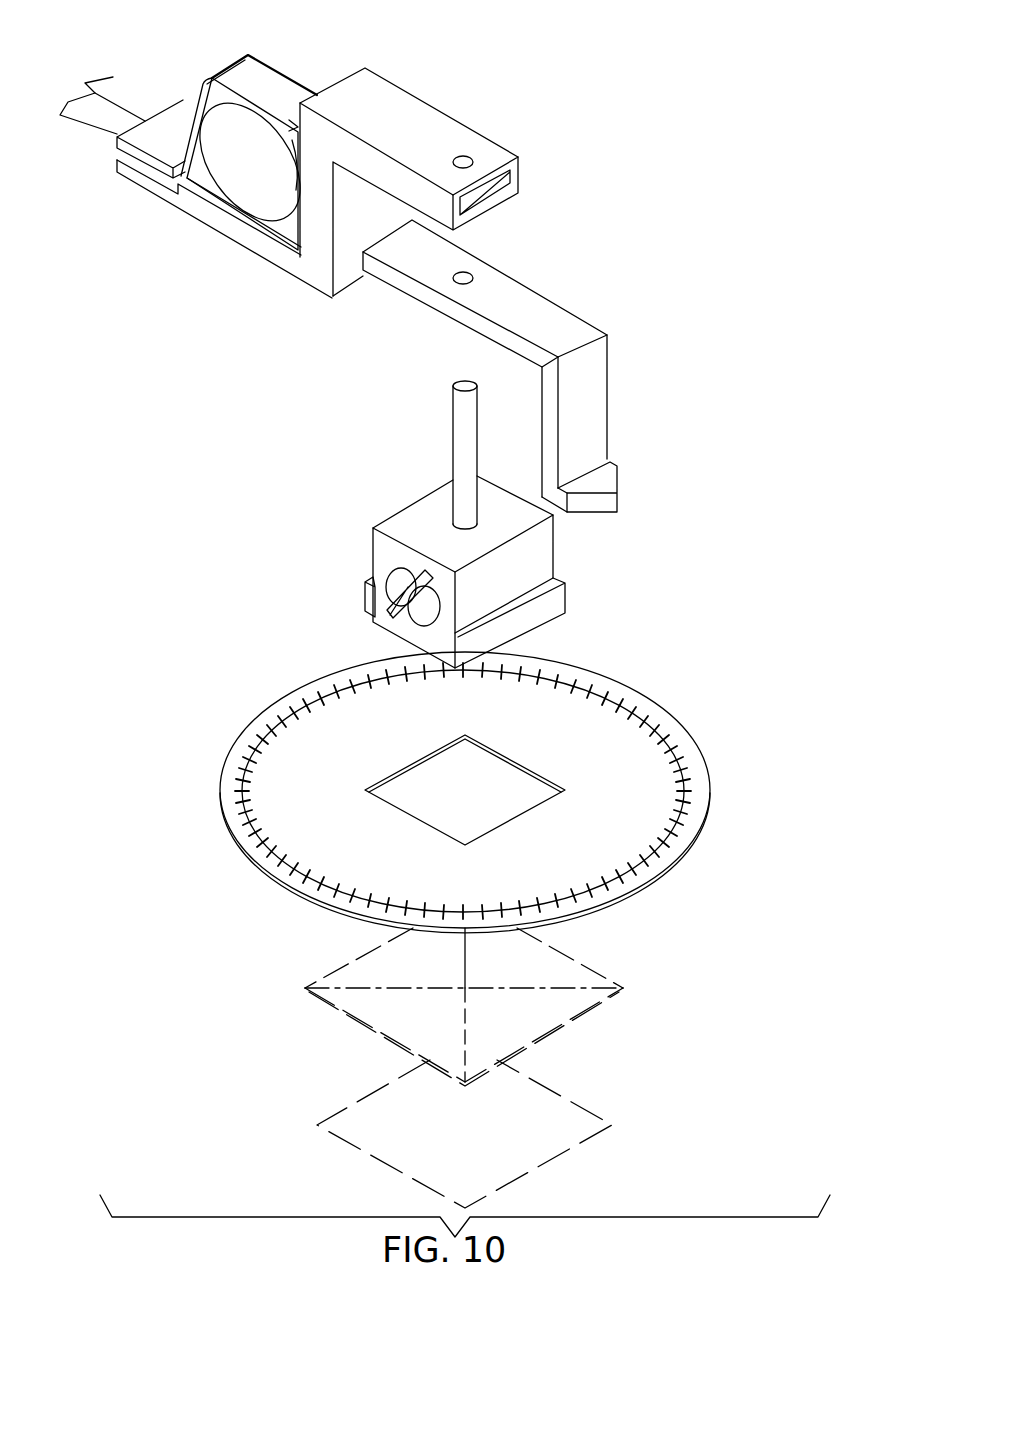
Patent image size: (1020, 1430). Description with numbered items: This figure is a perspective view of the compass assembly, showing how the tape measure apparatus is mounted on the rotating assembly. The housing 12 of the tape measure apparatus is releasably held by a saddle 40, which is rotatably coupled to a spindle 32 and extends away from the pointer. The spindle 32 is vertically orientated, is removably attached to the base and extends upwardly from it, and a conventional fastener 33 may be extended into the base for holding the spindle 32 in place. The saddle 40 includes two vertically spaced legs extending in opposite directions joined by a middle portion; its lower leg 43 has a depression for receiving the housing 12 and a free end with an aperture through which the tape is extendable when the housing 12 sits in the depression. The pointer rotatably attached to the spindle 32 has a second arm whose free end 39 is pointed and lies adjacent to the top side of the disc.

The housing 12 is at (257, 62).
The lower leg 43 is at (217, 232).
The saddle 40 is at (333, 298).
The free end 39 is at (617, 502).
The spindle 32 is at (455, 452).
The fastener 33 is at (390, 613).